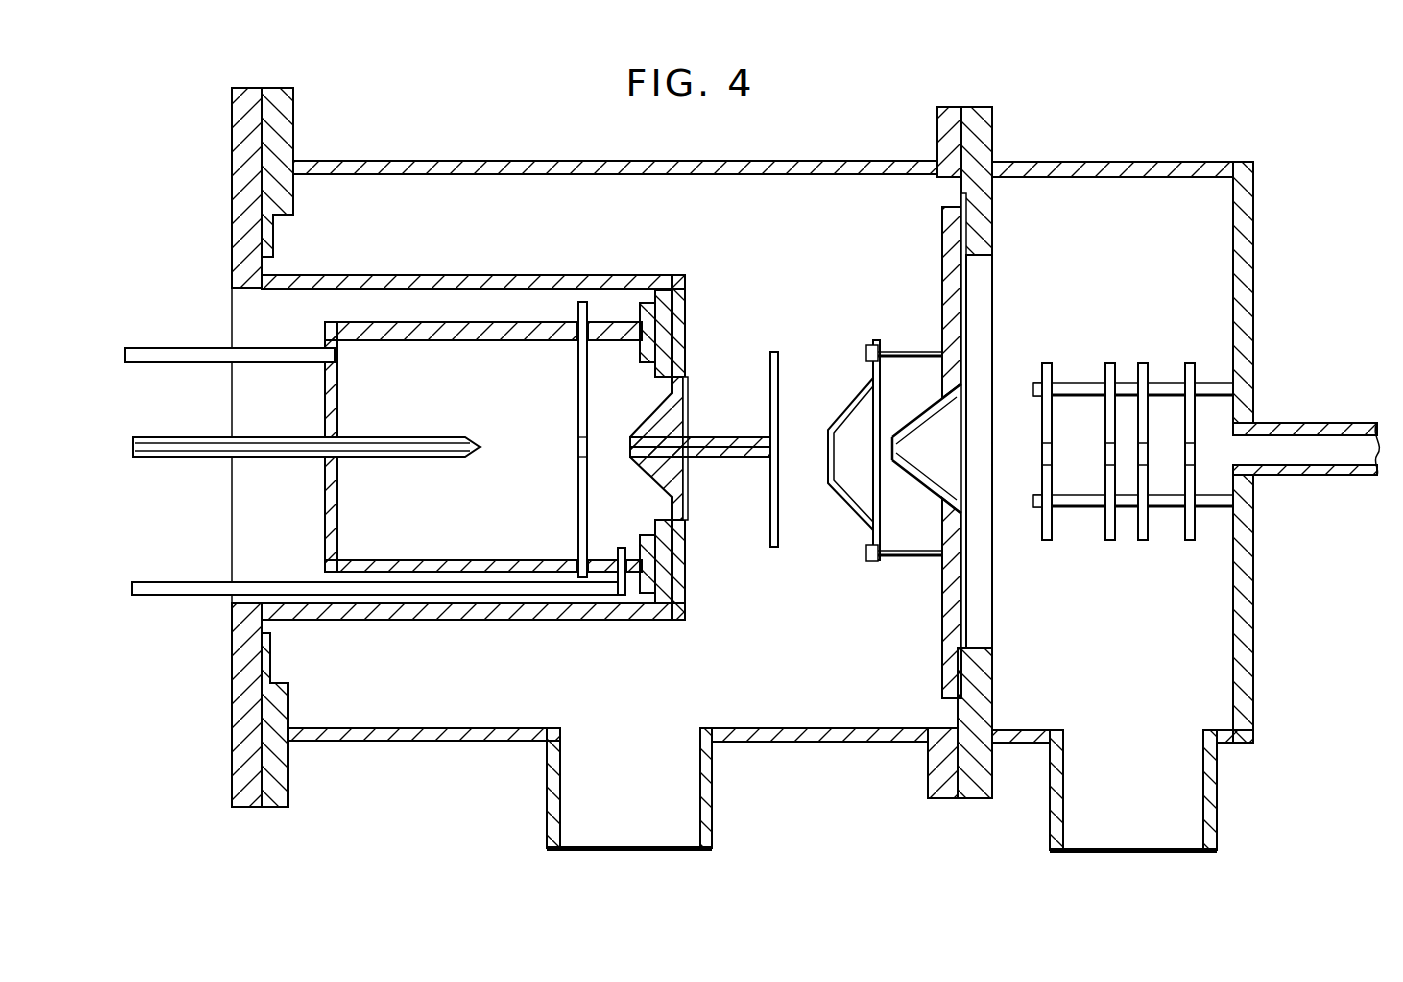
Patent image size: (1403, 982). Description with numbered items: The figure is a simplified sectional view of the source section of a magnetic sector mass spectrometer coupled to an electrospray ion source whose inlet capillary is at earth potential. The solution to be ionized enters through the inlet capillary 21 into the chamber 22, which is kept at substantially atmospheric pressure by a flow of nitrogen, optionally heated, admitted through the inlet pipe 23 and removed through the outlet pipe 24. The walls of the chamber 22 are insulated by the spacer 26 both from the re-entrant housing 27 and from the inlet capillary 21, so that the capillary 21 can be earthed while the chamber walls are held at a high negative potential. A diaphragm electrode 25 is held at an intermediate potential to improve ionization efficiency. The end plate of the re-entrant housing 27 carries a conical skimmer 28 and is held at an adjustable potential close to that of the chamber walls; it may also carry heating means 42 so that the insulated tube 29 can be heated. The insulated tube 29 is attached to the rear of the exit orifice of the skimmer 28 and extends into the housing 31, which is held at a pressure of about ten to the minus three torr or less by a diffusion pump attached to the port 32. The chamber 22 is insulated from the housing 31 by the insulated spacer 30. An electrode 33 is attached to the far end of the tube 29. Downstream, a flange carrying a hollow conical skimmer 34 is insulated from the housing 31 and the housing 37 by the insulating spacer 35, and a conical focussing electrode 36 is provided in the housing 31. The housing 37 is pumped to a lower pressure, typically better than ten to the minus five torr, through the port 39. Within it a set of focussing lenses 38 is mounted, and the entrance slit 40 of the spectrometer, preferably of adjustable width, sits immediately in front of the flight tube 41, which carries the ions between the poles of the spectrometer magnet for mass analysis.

The inlet capillary 21 is at (183, 437).
The chamber 22 is at (325, 507).
The inlet pipe 23 is at (203, 596).
The outlet pipe 24 is at (170, 348).
The diaphragm electrode 25 is at (578, 495).
The spacer 26 is at (655, 302).
The re-entrant housing 27 is at (690, 628).
The conical skimmer 28 is at (630, 433).
The insulated tube 29 is at (714, 470).
The insulated spacer 30 is at (265, 808).
The housing 31 is at (361, 160).
The port 32 is at (642, 830).
The electrode 33 is at (778, 548).
The hollow conical skimmer 34 is at (922, 405).
The insulating spacer 35 is at (966, 203).
The conical focussing electrode 36 is at (843, 505).
The housing 37 is at (1258, 262).
The focussing lenses 38 is at (1048, 362).
The port 39 is at (1165, 835).
The entrance slit 40 is at (1186, 543).
The flight tube 41 is at (1305, 423).
The heating means 42 is at (693, 378).